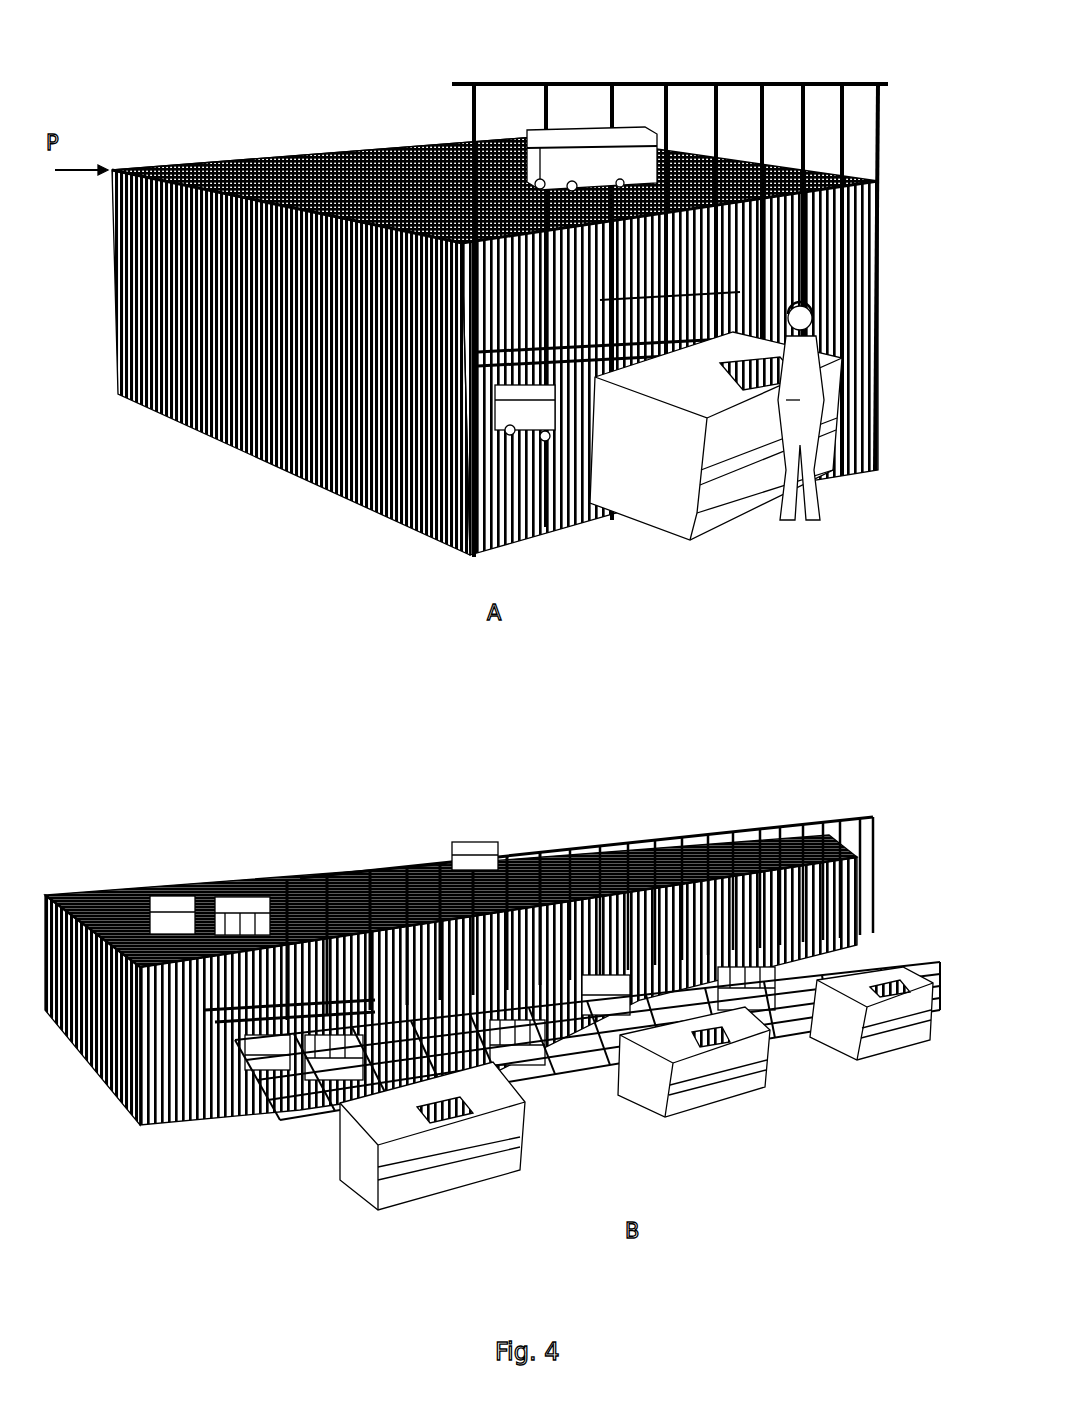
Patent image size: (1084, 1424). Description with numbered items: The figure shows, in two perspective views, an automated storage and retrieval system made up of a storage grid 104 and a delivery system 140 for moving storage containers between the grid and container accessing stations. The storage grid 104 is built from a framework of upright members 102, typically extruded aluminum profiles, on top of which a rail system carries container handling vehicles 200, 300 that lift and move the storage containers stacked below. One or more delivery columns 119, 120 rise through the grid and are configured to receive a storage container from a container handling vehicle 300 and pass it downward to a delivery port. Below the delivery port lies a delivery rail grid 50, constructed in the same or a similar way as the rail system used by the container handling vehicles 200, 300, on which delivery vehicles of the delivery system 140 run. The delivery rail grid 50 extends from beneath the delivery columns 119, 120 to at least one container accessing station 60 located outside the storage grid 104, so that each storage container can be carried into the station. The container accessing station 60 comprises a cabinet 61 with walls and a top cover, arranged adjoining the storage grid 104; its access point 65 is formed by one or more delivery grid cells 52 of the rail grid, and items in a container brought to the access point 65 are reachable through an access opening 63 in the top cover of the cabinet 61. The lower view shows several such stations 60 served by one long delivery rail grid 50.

The storage grid 104 is at (491, 575).
The upright members 102 is at (327, 418).
The delivery column 119 is at (585, 510).
The delivery column 120 is at (503, 140).
The container handling vehicle 200 is at (419, 549).
The container handling vehicle 300 is at (586, 143).
The container accessing station 60 is at (595, 810).
The cabinet 61 is at (595, 810).
The access point 65 is at (663, 811).
The access opening 63 is at (745, 388).
The delivery rail grid 50 is at (560, 1070).
The delivery grid cell 52 is at (265, 1092).
The delivery system 140 is at (880, 949).